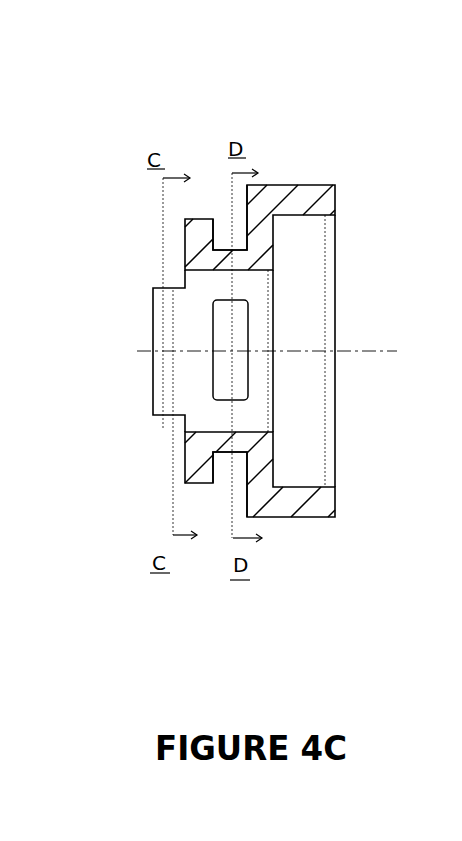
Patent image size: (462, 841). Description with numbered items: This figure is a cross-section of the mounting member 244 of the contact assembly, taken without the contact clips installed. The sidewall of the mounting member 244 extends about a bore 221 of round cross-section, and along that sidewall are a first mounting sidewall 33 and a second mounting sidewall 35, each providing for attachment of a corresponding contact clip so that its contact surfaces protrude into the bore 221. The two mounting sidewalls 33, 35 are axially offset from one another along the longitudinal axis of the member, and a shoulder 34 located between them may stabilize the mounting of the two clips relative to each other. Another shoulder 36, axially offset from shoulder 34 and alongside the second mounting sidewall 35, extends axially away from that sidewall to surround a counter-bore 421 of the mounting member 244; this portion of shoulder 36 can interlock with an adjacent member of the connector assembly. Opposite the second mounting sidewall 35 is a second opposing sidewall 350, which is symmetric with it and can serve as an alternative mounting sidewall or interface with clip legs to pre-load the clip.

The mounting member 244 is at (283, 48).
The shoulder 34 is at (200, 219).
The second mounting sidewall 35 is at (221, 250).
The shoulder 36 is at (273, 186).
The counter-bore 421 is at (300, 242).
The bore 221 is at (262, 323).
The first mounting sidewall 33 is at (153, 377).
The second opposing sidewall 350 is at (231, 452).